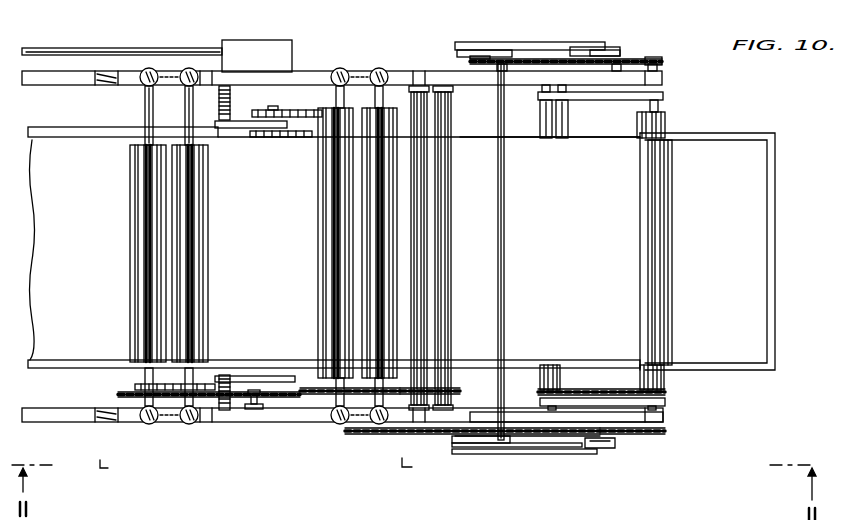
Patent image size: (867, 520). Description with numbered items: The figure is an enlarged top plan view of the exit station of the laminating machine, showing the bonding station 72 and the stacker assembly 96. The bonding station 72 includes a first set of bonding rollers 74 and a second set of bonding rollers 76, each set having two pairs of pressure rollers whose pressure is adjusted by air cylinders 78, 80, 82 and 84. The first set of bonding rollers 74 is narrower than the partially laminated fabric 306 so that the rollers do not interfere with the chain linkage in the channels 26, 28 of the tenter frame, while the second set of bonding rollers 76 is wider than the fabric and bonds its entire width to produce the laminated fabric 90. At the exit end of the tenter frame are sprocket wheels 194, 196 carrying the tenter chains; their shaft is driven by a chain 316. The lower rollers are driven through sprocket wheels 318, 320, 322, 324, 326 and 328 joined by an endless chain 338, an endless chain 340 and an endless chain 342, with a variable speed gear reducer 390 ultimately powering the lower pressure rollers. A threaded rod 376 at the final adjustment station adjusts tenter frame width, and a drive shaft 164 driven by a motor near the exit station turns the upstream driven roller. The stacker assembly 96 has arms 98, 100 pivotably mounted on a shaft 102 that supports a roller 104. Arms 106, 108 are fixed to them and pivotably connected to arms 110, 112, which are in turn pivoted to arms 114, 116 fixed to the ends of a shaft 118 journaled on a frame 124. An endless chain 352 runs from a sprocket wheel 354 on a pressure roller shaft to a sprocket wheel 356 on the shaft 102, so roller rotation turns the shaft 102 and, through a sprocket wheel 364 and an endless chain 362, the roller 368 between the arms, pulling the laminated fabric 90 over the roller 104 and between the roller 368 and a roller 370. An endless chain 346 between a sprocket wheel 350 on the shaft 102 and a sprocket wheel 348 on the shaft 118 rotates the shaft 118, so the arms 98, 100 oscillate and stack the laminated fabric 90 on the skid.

The drive shaft 164 is at (82, 51).
The partially laminated fabric 306 is at (50, 133).
The channel 28 is at (92, 130).
The chain 316 is at (296, 115).
The sprocket wheel 196 is at (300, 139).
The sprocket wheel 348 is at (470, 63).
The arm 116 is at (487, 52).
The arm 112 is at (522, 48).
The endless chain 346 is at (555, 60).
The arm 108 is at (618, 51).
The sprocket wheel 350 is at (660, 60).
The shaft 102 is at (660, 72).
The arm 100 is at (594, 100).
The roller 104 is at (668, 118).
The stacker assembly 96 is at (745, 123).
The first set of bonding rollers 74 is at (178, 245).
The second set of bonding rollers 76 is at (370, 215).
The laminated fabric 90 is at (562, 222).
The shaft 118 is at (503, 278).
The channel 26 is at (46, 360).
The endless chain 340 is at (178, 363).
The sprocket wheel 326 is at (213, 366).
The sprocket wheel 194 is at (287, 360).
The endless chain 338 is at (365, 385).
The roller 368 is at (545, 365).
The roller 370 is at (568, 390).
The endless chain 362 is at (585, 389).
The sprocket wheel 318 is at (400, 395).
The sprocket wheel 320 is at (335, 391).
The sprocket wheel 328 is at (135, 387).
The variable speed gear reducer 390 is at (118, 395).
The endless chain 342 is at (294, 384).
The sprocket wheel 322 is at (355, 395).
The sprocket wheel 324 is at (200, 400).
The threaded rod 376 is at (228, 395).
The air cylinder 78 is at (148, 425).
The air cylinder 80 is at (187, 425).
The air cylinder 82 is at (335, 425).
The air cylinder 84 is at (373, 425).
The sprocket wheel 354 is at (398, 432).
The endless chain 352 is at (438, 435).
The arm 114 is at (480, 443).
The arm 110 is at (508, 454).
The frame 124 is at (540, 423).
The arm 106 is at (617, 443).
The sprocket wheel 364 is at (664, 390).
The arm 98 is at (658, 403).
The sprocket wheel 356 is at (662, 433).
The bonding station 72 is at (241, 472).